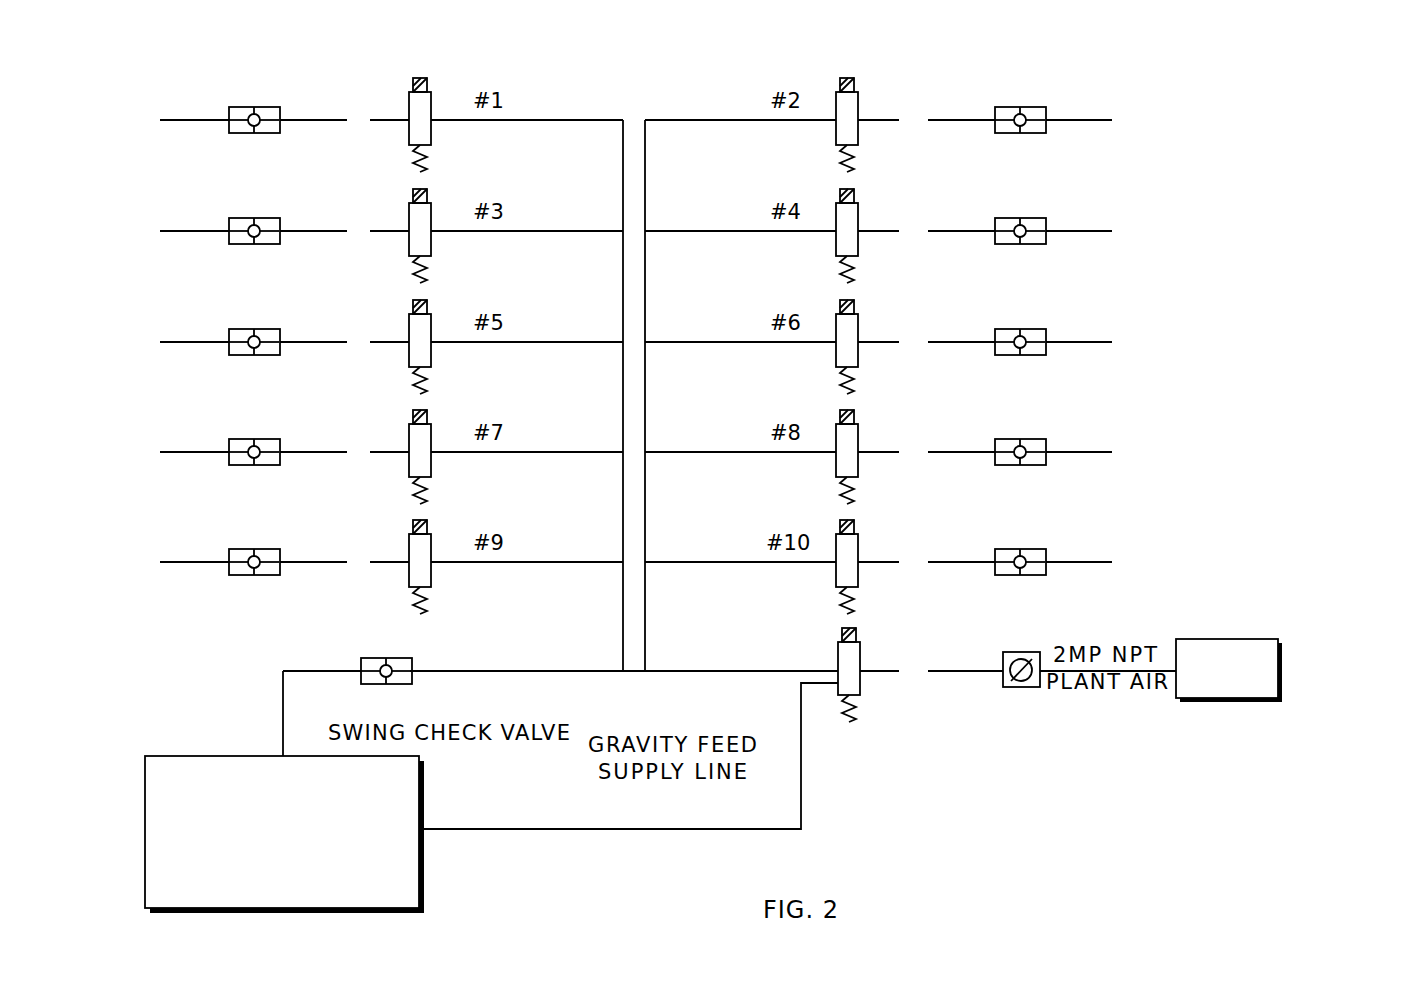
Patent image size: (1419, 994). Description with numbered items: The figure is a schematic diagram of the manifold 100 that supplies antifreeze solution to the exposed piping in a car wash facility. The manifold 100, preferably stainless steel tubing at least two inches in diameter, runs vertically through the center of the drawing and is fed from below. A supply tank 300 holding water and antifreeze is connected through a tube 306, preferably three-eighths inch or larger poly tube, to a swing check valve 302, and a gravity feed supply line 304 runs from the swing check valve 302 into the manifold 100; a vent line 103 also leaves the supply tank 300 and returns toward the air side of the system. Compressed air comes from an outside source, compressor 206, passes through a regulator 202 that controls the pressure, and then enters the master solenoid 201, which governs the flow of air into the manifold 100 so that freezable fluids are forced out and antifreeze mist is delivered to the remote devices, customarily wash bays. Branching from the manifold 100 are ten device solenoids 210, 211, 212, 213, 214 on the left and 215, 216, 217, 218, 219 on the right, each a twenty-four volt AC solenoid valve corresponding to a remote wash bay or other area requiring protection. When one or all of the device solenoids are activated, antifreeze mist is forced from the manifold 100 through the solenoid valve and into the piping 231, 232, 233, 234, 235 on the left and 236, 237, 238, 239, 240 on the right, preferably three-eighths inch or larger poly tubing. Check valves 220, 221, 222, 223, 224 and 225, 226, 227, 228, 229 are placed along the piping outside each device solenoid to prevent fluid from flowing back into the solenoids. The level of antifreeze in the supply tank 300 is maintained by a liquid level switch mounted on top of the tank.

The manifold 100 is at (645, 183).
The vent line 103 is at (535, 830).
The master solenoid 201 is at (861, 650).
The regulator 202 is at (1030, 688).
The compressor 206 is at (1258, 700).
The device solenoid 210 is at (454, 112).
The device solenoid 211 is at (454, 223).
The device solenoid 212 is at (454, 334).
The device solenoid 213 is at (454, 444).
The device solenoid 214 is at (454, 554).
The device solenoid 215 is at (814, 112).
The device solenoid 216 is at (814, 223).
The device solenoid 217 is at (814, 334).
The device solenoid 218 is at (814, 444).
The device solenoid 219 is at (814, 554).
The check valve 220 is at (233, 96).
The check valve 221 is at (233, 207).
The check valve 222 is at (233, 318).
The check valve 223 is at (233, 428).
The check valve 224 is at (233, 538).
The check valve 225 is at (1041, 94).
The check valve 226 is at (1041, 205).
The check valve 227 is at (1041, 316).
The check valve 228 is at (1041, 426).
The check valve 229 is at (1041, 536).
The piping 231 is at (226, 110).
The piping 232 is at (226, 221).
The piping 233 is at (226, 332).
The piping 234 is at (226, 442).
The piping 235 is at (226, 552).
The piping 236 is at (1049, 110).
The piping 237 is at (1049, 221).
The piping 238 is at (1049, 332).
The piping 239 is at (1049, 442).
The piping 240 is at (1049, 552).
The supply tank 300 is at (200, 756).
The swing check valve 302 is at (400, 685).
The gravity feed supply line 304 is at (587, 672).
The tube 306 is at (281, 690).